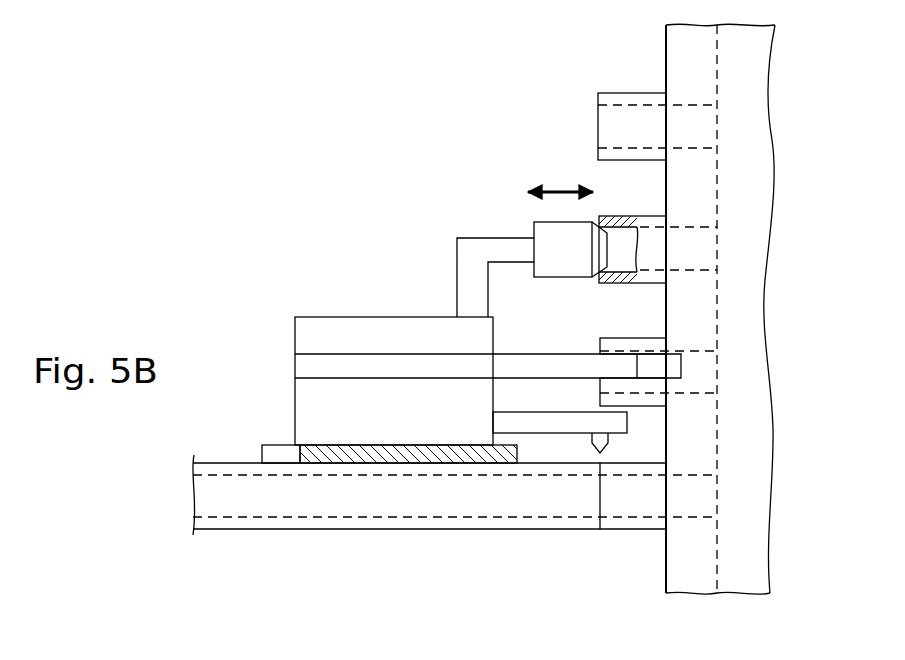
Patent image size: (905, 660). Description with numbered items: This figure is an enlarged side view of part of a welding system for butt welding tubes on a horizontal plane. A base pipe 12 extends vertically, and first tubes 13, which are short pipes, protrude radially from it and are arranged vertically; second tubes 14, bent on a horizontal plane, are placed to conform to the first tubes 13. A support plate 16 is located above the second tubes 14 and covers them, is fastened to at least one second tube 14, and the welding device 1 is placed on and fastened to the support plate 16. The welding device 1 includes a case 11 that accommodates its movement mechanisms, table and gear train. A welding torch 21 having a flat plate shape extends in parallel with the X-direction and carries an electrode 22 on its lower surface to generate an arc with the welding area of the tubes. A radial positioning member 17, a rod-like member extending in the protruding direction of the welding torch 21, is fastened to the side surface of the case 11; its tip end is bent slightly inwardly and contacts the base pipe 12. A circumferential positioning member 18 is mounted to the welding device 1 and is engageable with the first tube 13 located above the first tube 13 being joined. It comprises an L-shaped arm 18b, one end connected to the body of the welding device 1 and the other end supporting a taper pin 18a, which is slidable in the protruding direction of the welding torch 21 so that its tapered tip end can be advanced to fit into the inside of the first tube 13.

The welding device 1 is at (362, 302).
The case 11 is at (323, 333).
The base pipe 12 is at (745, 142).
The first tube 13 is at (627, 218).
The second tube 14 is at (290, 500).
The support plate 16 is at (362, 455).
The radial positioning member 17 is at (418, 365).
The circumferential positioning member 18 is at (475, 237).
The taper pin 18a is at (548, 233).
The L-shaped arm 18b is at (472, 283).
The welding torch 21 is at (550, 423).
The electrode 22 is at (597, 450).